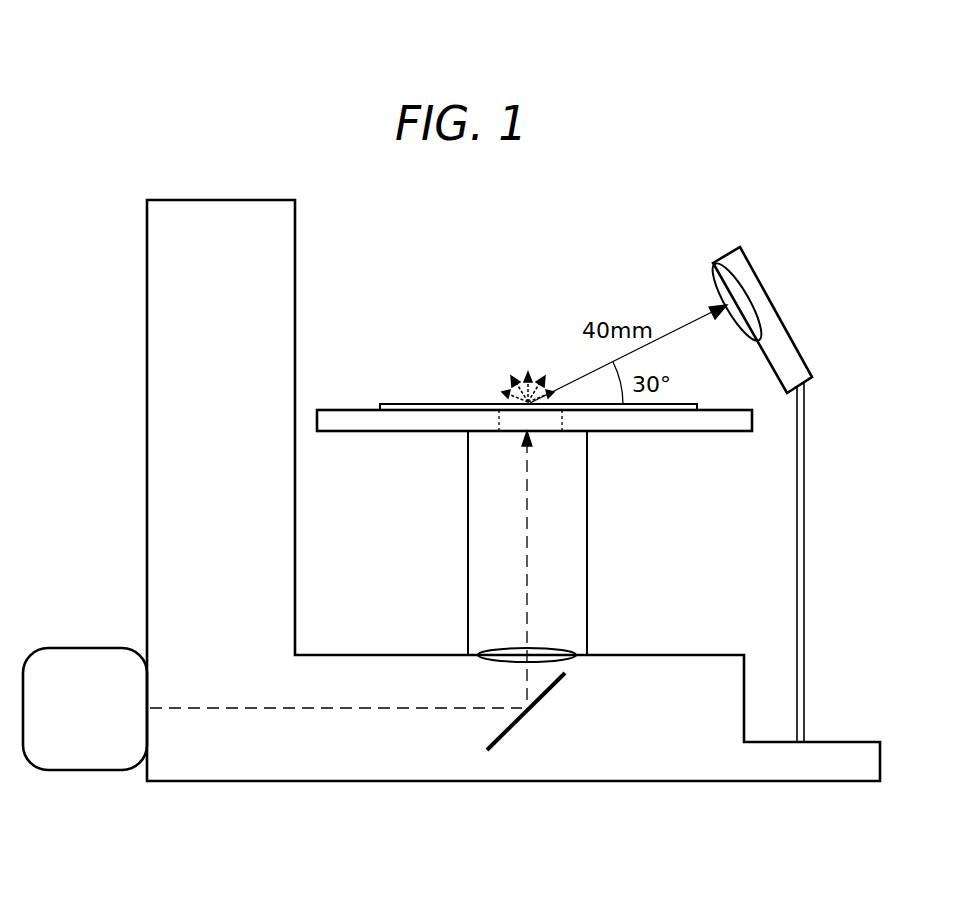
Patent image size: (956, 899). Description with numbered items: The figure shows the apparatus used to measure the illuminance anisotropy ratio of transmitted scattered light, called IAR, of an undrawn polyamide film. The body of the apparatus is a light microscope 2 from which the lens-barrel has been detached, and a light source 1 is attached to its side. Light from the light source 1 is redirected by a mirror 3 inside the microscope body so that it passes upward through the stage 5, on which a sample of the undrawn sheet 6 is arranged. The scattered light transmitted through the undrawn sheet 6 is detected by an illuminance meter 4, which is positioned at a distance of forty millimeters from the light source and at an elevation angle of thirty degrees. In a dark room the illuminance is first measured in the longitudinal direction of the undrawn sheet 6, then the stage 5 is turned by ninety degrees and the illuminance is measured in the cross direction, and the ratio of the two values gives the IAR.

The light source 1 is at (92, 648).
The light microscope 2 is at (210, 781).
The mirror 3 is at (512, 728).
The illuminance meter 4 is at (767, 290).
The stage 5 is at (423, 424).
The undrawn sheet 6 is at (406, 403).